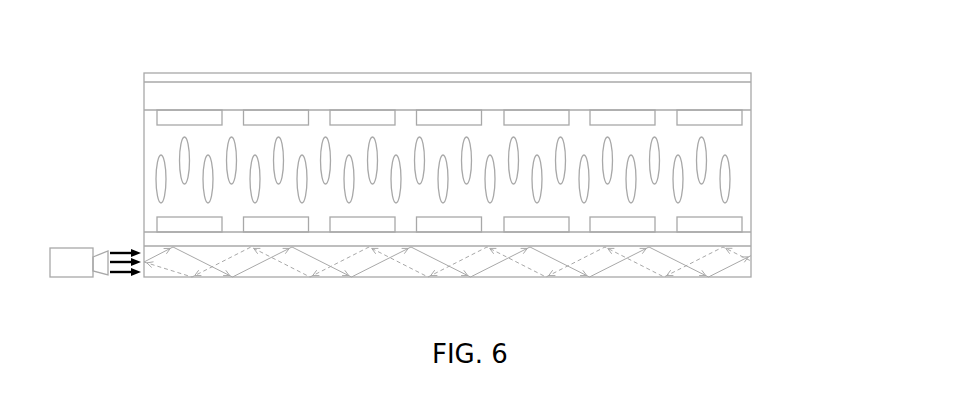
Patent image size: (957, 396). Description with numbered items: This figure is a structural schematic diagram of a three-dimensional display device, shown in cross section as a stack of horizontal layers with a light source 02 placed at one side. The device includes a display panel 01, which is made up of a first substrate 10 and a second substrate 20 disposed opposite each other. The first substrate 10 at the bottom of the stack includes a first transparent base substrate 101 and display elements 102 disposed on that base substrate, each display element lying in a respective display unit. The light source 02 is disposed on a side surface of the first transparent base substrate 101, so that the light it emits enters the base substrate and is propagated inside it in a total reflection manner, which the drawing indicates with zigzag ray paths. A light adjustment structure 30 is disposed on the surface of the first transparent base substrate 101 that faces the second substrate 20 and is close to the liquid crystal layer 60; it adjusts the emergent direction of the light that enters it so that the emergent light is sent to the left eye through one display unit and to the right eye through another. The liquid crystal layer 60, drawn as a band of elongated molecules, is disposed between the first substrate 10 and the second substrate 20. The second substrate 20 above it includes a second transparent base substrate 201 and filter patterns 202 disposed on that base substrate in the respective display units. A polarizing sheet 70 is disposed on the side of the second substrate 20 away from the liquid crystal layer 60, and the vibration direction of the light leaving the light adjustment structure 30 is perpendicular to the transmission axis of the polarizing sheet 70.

The display panel 01 is at (188, 56).
The light source 02 is at (57, 262).
The first substrate 10 is at (510, 249).
The first transparent base substrate 101 is at (487, 265).
The display elements 102 is at (740, 223).
The light adjustment structure 30 is at (737, 239).
The second substrate 20 is at (511, 110).
The second transparent base substrate 201 is at (721, 97).
The filter patterns 202 is at (721, 118).
The liquid crystal layer 60 is at (751, 178).
The polarizing sheet 70 is at (730, 77).